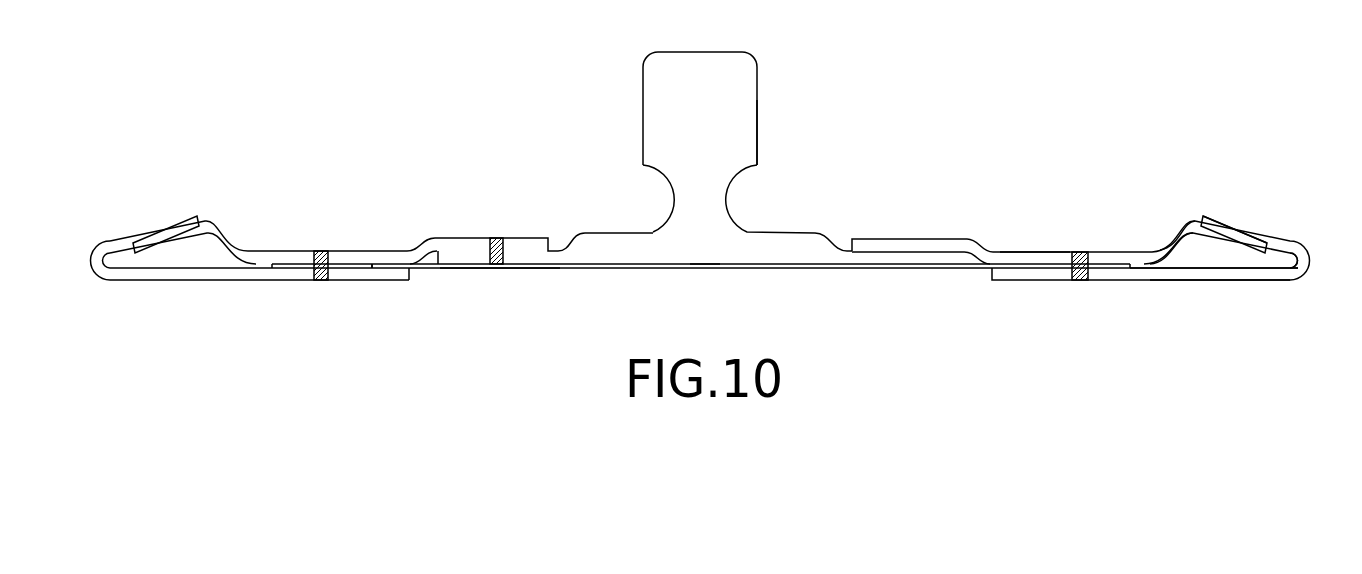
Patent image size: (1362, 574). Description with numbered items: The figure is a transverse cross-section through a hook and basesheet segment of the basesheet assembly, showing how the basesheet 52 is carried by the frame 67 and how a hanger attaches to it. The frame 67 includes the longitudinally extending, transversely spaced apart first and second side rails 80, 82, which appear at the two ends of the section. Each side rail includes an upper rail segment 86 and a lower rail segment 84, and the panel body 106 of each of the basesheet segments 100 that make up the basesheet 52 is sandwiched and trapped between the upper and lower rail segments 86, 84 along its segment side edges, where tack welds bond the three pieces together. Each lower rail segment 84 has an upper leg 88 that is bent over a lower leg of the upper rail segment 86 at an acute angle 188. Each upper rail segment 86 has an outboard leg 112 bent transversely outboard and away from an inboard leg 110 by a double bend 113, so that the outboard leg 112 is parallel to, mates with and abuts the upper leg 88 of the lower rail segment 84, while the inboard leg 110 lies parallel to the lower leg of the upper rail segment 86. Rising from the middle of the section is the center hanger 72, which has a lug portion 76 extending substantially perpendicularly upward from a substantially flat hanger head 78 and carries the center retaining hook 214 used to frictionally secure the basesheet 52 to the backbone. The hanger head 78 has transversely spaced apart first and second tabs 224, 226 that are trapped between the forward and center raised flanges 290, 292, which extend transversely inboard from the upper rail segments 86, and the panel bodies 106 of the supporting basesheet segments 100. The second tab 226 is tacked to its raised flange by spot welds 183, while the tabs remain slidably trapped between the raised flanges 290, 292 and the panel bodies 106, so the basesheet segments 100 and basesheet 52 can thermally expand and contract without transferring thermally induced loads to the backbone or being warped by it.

The second side rail 82 is at (150, 208).
The frame 67 is at (249, 214).
The center raised flange 292 is at (473, 238).
The spot welds 183 is at (497, 238).
The second tab 226 is at (453, 262).
The basesheet 52 is at (545, 268).
The lug portion 76 is at (677, 190).
The center retaining hook 214 is at (757, 83).
The center hanger 72 is at (772, 138).
The panel body 106 is at (703, 264).
The hanger head 78 is at (785, 232).
The basesheet segments 100 is at (785, 269).
The forward raised flange 290 is at (882, 239).
The first tab 224 is at (907, 269).
The inboard leg 110 is at (1036, 252).
The double bend 113 is at (1165, 238).
The upper rail segment 86 is at (1178, 220).
The outboard leg 112 is at (1220, 236).
The upper leg 88 is at (1237, 220).
The first side rail 80 is at (1295, 224).
The acute angle 188 is at (1293, 260).
The lower rail segment 84 is at (1220, 282).